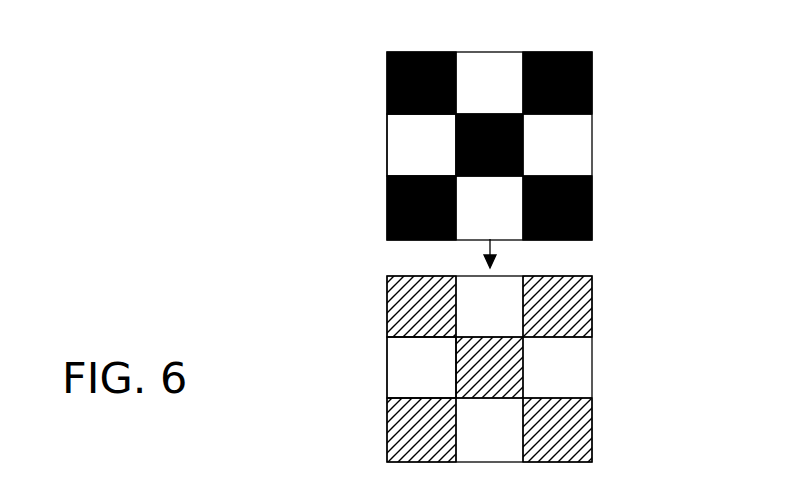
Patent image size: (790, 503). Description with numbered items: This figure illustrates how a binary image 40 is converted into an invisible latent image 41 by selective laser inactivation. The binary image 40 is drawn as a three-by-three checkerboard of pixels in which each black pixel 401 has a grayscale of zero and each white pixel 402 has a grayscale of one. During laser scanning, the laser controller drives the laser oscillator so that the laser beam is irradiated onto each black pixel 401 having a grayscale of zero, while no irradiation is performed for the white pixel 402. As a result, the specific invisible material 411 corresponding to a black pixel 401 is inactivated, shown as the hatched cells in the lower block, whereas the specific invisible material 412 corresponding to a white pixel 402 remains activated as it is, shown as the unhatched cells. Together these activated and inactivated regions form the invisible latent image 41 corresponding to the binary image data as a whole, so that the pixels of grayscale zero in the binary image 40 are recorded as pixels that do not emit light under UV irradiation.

The binary image 40 is at (607, 53).
The black pixel 401 is at (398, 87).
The white pixel 402 is at (398, 150).
The invisible latent image 41 is at (607, 277).
The specific invisible material 411 is at (398, 309).
The specific invisible material 412 is at (398, 371).